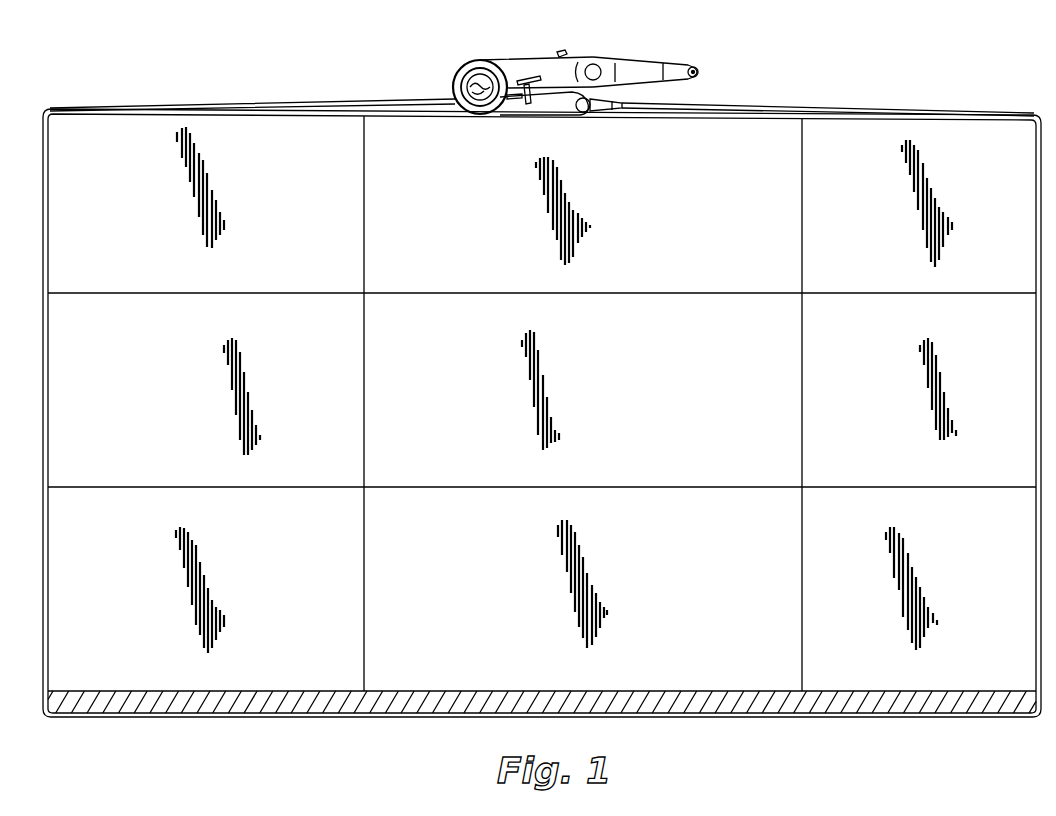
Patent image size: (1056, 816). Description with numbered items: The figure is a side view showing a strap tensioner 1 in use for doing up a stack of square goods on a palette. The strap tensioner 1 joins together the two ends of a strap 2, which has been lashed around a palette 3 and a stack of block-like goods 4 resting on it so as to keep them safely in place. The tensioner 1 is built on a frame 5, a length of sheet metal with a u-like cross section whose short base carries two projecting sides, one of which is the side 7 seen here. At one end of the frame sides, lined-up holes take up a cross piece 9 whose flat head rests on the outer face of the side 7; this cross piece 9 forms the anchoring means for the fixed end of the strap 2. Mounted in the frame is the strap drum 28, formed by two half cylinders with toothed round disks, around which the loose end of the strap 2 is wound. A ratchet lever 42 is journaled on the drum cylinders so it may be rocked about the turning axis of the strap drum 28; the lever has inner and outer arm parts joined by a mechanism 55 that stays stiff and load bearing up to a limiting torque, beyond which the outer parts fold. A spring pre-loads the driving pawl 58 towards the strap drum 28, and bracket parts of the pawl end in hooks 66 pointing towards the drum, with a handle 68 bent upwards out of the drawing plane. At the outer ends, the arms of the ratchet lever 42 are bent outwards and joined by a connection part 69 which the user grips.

The strap tensioner 1 is at (579, 92).
The strap 2 is at (322, 103).
The palette 3 is at (837, 703).
The block-like goods 4 is at (592, 399).
The frame 5 is at (567, 118).
The side of the U section 7 is at (552, 108).
The cross piece 9 is at (589, 110).
The strap drum 28 is at (460, 87).
The ratchet lever 42 is at (648, 70).
The mechanism 55 is at (597, 63).
The driving pawl 58 is at (515, 101).
The hook 66 is at (530, 106).
The handle 68 is at (558, 52).
The connection part 69 is at (700, 71).